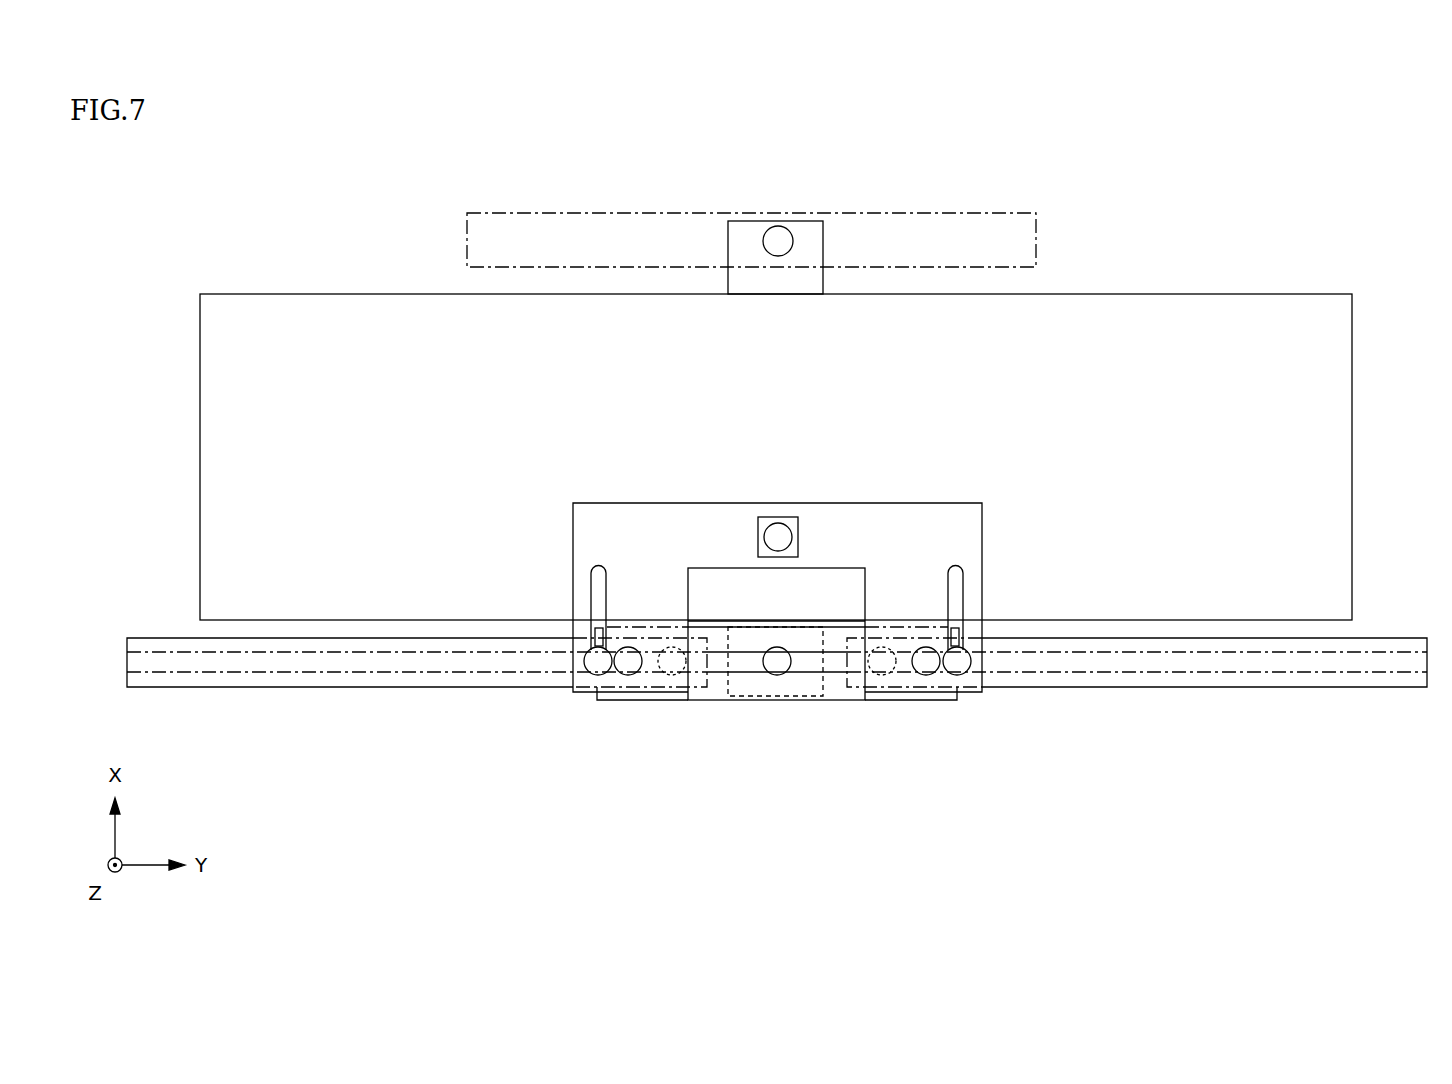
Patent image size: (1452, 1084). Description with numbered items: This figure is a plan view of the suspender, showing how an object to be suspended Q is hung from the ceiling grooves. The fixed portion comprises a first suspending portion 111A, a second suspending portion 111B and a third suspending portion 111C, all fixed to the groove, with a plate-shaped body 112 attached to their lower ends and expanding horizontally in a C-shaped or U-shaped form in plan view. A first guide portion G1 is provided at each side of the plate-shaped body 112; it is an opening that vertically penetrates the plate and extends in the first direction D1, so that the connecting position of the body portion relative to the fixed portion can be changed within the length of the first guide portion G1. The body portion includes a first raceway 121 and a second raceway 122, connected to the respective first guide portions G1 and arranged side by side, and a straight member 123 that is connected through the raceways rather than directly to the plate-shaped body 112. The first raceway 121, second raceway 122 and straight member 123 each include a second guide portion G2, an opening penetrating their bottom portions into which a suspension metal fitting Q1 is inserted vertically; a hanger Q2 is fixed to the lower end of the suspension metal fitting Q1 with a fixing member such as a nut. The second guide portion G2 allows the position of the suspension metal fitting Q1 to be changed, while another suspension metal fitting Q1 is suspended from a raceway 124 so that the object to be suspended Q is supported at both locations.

The object to be suspended Q is at (334, 275).
The first direction D1 is at (110, 433).
The raceway 124 is at (1001, 220).
The hanger Q2 is at (740, 228).
The suspension metal fitting Q1 is at (772, 237).
The plate-shaped body 112 is at (973, 520).
The third suspending portion 111C is at (775, 532).
The straight member 123 is at (715, 693).
The first raceway 121 is at (245, 688).
The second raceway 122 is at (1340, 688).
The second guide portion G2 is at (372, 666).
The first guide portion G1 is at (596, 583).
The first suspending portion 111A is at (632, 665).
The second suspending portion 111B is at (926, 665).